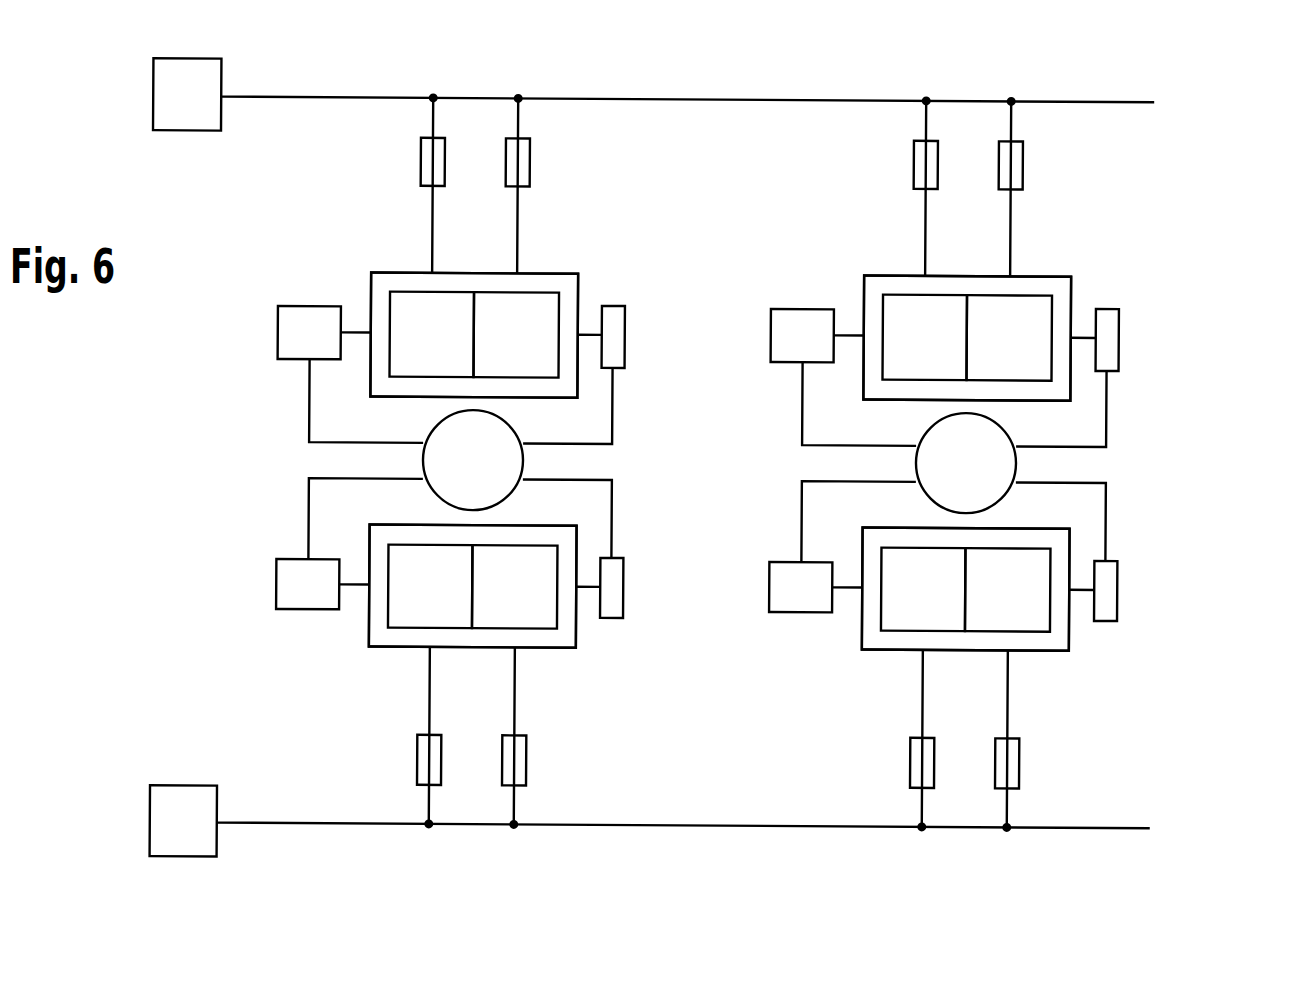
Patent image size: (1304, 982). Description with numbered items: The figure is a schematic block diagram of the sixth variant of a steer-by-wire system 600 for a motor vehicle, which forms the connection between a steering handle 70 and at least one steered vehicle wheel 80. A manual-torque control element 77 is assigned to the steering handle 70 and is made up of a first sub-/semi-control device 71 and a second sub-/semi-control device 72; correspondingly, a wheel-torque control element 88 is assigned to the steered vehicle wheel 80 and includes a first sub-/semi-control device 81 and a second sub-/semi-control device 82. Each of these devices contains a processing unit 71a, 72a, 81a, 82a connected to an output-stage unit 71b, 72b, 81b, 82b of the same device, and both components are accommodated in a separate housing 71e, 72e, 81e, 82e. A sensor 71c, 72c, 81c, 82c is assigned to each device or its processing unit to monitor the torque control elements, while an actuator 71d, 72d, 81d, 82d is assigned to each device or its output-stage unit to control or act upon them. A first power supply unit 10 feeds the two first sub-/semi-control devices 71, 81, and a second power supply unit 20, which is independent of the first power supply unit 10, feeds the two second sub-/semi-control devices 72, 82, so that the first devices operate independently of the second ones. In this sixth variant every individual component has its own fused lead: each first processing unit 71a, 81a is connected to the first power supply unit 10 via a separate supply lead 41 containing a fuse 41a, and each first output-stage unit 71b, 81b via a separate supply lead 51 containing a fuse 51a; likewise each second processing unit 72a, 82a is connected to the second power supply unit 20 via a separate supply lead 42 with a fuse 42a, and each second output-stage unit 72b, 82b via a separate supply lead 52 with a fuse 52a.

The first power supply unit 10 is at (202, 114).
The second power supply unit 20 is at (200, 839).
The supply lead 41 is at (647, 184).
The fuse 41a is at (644, 156).
The supply lead 51 is at (799, 185).
The fuse 51a is at (802, 160).
The supply lead 42 is at (642, 738).
The fuse 42a is at (640, 769).
The supply lead 52 is at (796, 739).
The fuse 52a is at (796, 771).
The steering handle 70 is at (488, 479).
The first sub-/semi-control device 71 is at (429, 297).
The processing unit 71a is at (455, 353).
The output-stage unit 71b is at (540, 353).
The sensor 71c is at (332, 353).
The actuator 71d is at (610, 374).
The housing 71e is at (425, 326).
The second sub-/semi-control device 72 is at (426, 628).
The processing unit 72a is at (455, 604).
The output-stage unit 72b is at (540, 604).
The sensor 72c is at (332, 605).
The actuator 72d is at (609, 548).
The housing 72e is at (424, 600).
The manual-torque control element 77 is at (387, 462).
The steered vehicle wheel 80 is at (982, 478).
The first sub-/semi-control device 81 is at (1028, 301).
The processing unit 81a is at (948, 354).
The output-stage unit 81b is at (1033, 354).
The sensor 81c is at (827, 354).
The actuator 81d is at (1110, 377).
The housing 81e is at (1033, 327).
The second sub-/semi-control device 82 is at (1026, 637).
The processing unit 82a is at (948, 604).
The output-stage unit 82b is at (1033, 604).
The sensor 82c is at (827, 605).
The actuator 82d is at (1109, 551).
The housing 82e is at (1032, 597).
The wheel-torque control element 88 is at (1036, 466).
The steer-by-wire system 600 is at (690, 460).